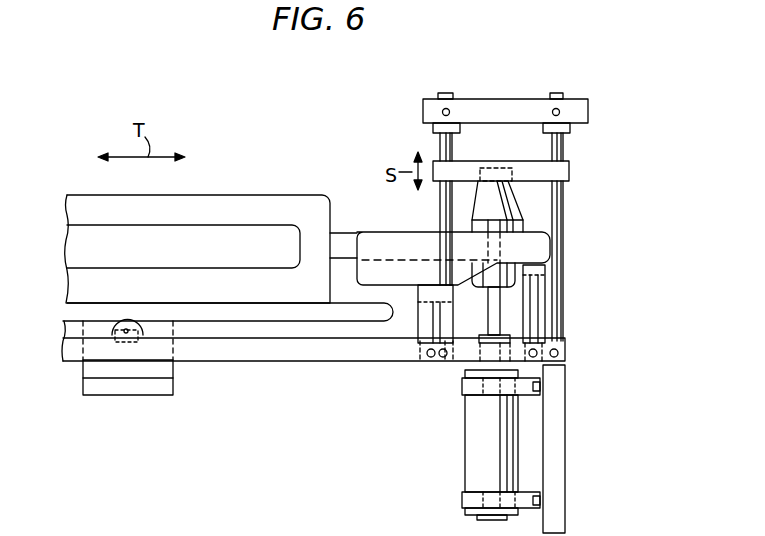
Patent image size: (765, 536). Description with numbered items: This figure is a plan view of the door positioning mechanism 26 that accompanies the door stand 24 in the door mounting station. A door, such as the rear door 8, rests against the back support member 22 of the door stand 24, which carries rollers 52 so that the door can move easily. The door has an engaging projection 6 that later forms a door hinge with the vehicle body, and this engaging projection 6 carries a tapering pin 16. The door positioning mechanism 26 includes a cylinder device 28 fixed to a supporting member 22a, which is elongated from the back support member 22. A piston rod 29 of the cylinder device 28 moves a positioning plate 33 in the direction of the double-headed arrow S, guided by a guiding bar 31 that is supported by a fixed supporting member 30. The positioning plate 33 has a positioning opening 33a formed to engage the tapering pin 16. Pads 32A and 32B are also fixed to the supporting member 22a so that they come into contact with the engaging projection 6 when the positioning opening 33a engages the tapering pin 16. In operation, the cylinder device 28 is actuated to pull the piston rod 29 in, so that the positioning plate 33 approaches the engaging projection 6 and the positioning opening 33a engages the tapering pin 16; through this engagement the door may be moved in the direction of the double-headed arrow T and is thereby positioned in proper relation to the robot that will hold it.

The engaging projection 6 is at (382, 235).
The rear door 8 is at (268, 195).
The tapering pin 16 is at (483, 202).
The back support member 22 is at (173, 380).
The supporting member 22a is at (328, 353).
The door stand 24 is at (283, 364).
The door positioning mechanism 26 is at (575, 227).
The cylinder device 28 is at (478, 438).
The piston rod 29 is at (500, 318).
The fixed supporting member 30 is at (520, 99).
The guiding bar 31 is at (440, 141).
The pad 32A is at (420, 320).
The pad 32B is at (535, 292).
The positioning plate 33 is at (570, 173).
The positioning opening 33a is at (480, 160).
The rollers 52 is at (117, 319).